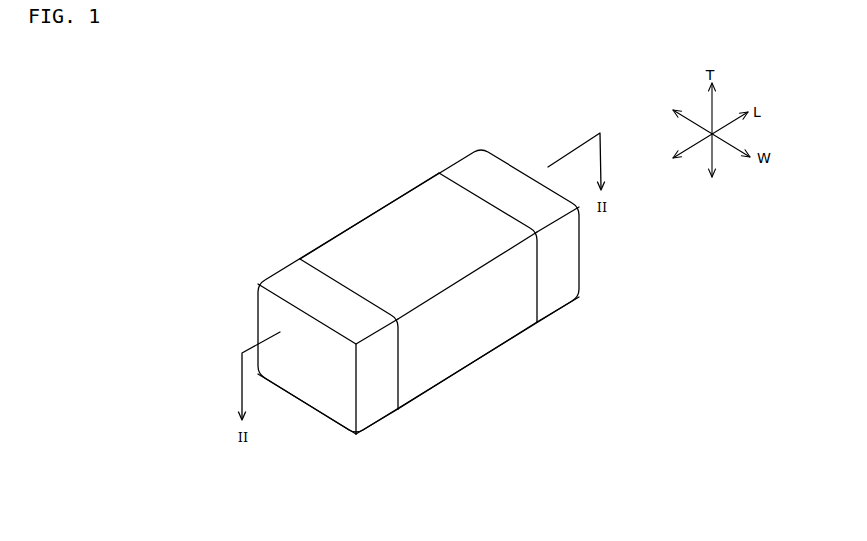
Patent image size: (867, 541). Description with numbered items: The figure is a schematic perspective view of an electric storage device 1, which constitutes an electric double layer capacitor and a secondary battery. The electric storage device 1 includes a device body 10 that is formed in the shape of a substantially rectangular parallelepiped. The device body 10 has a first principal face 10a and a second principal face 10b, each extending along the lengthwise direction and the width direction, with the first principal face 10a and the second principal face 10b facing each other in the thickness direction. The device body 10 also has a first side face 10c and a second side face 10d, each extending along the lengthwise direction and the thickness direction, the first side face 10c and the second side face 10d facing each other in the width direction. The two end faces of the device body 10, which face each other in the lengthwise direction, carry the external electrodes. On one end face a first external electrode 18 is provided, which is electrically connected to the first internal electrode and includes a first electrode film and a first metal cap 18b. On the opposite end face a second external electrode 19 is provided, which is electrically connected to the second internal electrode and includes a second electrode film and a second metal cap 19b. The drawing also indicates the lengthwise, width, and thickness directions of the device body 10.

The electric storage device 1 is at (541, 124).
The device body 10 is at (407, 183).
The first principal face 10a is at (402, 227).
The second principal face 10b is at (453, 375).
The first side face 10c is at (428, 185).
The second side face 10d is at (426, 392).
The first external electrode 18 is at (256, 325).
The first metal cap 18b is at (319, 410).
The second external electrode 19 is at (581, 258).
The second metal cap 19b is at (579, 296).